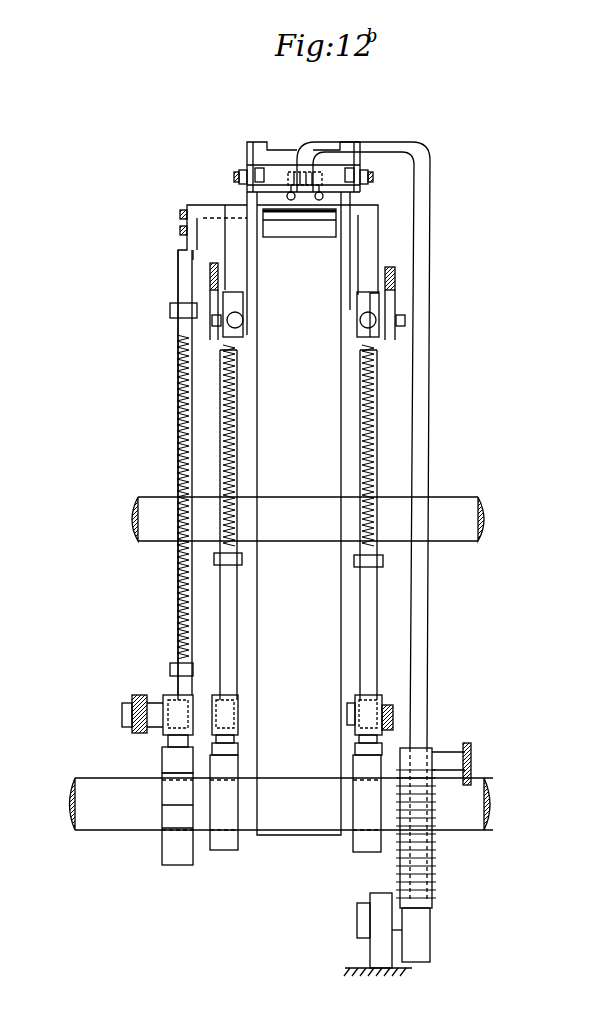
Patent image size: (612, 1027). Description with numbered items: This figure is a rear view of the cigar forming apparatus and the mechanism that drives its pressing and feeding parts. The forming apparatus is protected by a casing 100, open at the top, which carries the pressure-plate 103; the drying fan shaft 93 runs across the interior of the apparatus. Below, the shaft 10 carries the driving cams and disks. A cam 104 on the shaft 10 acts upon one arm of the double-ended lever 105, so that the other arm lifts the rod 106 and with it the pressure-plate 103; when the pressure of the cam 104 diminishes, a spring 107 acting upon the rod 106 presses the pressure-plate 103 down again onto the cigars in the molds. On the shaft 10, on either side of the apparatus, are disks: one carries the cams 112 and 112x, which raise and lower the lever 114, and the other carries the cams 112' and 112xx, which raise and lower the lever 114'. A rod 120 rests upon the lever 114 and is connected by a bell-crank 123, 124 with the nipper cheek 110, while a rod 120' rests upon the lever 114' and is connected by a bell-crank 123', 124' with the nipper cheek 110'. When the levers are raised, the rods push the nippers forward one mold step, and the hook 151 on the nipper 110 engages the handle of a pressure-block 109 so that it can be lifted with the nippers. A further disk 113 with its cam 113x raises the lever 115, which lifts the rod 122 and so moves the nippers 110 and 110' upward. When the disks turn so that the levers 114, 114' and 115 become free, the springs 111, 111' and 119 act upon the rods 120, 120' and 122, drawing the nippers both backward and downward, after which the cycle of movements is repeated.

The pressure-plate 103 is at (278, 148).
The rod 106 is at (402, 150).
The cheek of the nippers 110' is at (291, 179).
The hook 151 is at (286, 196).
The cheek of the nippers 110 is at (336, 194).
The pressure-block 109 is at (318, 222).
The casing 100 is at (299, 513).
The bell-crank 124' is at (212, 446).
The bell-crank 124 is at (377, 266).
The bell-crank 123' is at (218, 326).
The bell-crank 123 is at (384, 325).
The spring 119 is at (180, 380).
The spring 111' is at (256, 445).
The spring 111 is at (342, 445).
The rod 120' is at (250, 525).
The rod 120 is at (342, 525).
The rod 122 is at (174, 665).
The shaft 93 is at (470, 540).
The shaft 10 is at (93, 826).
The lever 115 is at (170, 725).
The cam 113x is at (162, 795).
The disk 113 is at (189, 862).
The lever 114' is at (251, 719).
The cam 112xx is at (238, 751).
The cam 112' is at (223, 815).
The lever 114 is at (349, 719).
The cam 112x is at (356, 748).
The cam 112 is at (366, 816).
The cam 104 is at (447, 752).
The spring 107 is at (430, 870).
The double-ended lever 105 is at (430, 950).